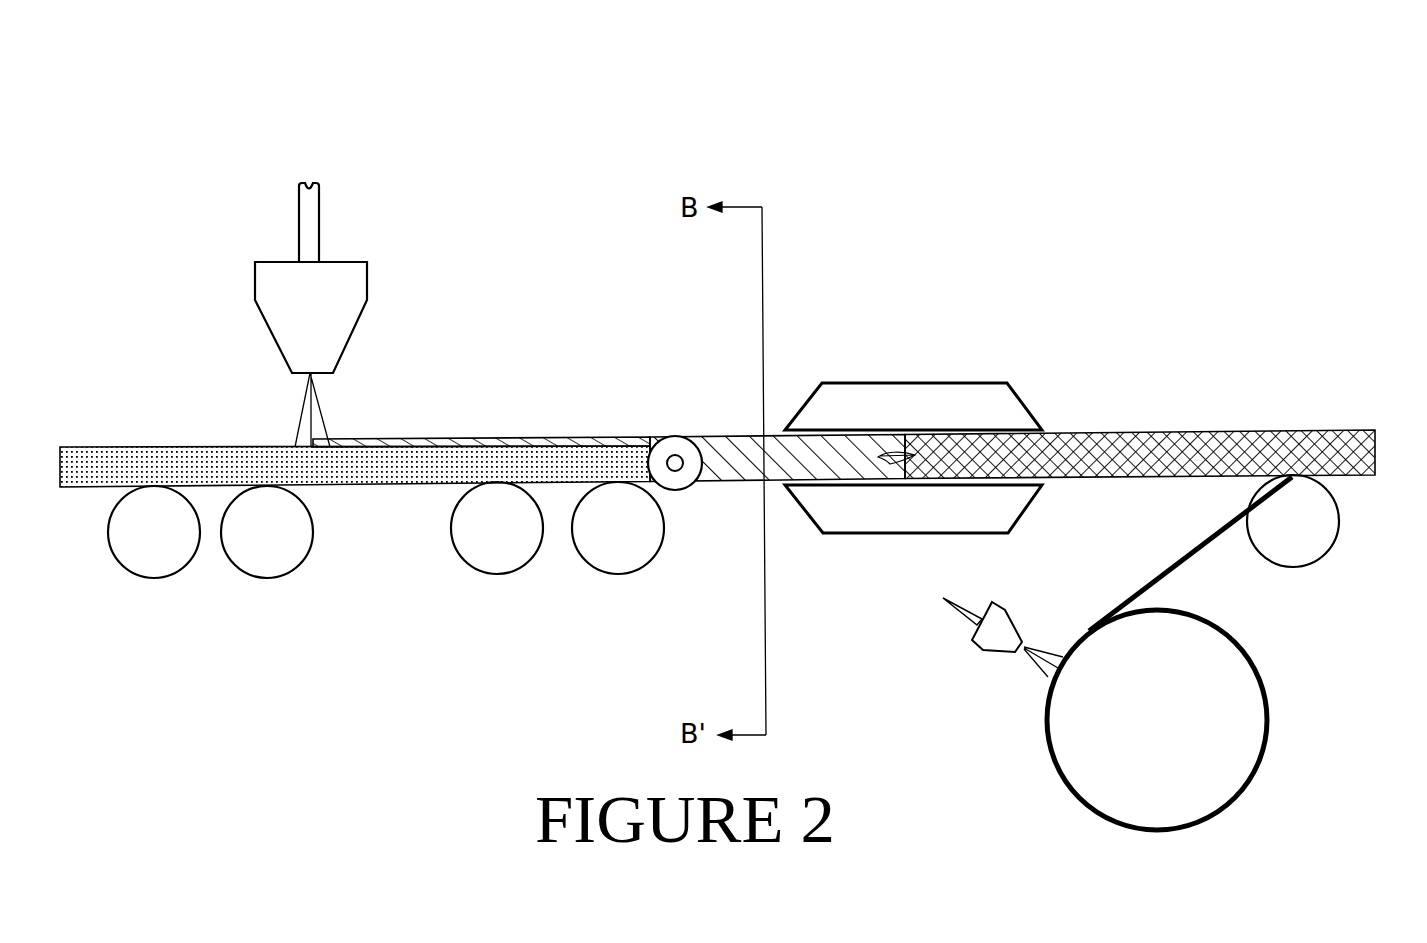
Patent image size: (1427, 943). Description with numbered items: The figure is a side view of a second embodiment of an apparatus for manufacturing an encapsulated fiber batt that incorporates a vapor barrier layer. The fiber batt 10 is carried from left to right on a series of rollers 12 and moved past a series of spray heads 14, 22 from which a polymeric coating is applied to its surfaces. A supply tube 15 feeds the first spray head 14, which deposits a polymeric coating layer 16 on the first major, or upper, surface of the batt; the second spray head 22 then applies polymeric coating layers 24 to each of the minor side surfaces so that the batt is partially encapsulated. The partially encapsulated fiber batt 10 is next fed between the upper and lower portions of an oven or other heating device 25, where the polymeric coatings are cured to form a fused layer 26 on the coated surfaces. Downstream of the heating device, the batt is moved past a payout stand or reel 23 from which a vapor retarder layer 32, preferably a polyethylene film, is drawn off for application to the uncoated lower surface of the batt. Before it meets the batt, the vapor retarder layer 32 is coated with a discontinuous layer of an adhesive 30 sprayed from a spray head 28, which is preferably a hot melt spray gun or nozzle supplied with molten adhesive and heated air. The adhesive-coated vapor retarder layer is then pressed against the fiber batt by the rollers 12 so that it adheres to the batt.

The fiber batt 10 is at (230, 447).
The rollers 12 is at (492, 573).
The spray head 14 is at (363, 316).
The feed tube 15 is at (320, 218).
The polymeric coating layer 16 is at (447, 438).
The spray head 22 is at (677, 436).
The payout stand or reel 23 is at (1267, 742).
The polymeric coating layers 24 is at (717, 482).
The oven or other heating device 25 is at (913, 383).
The fused layer 26 is at (1063, 432).
The spray head 28 is at (972, 642).
The adhesive 30 is at (1040, 670).
The vapor retarder layer 32 is at (1192, 553).